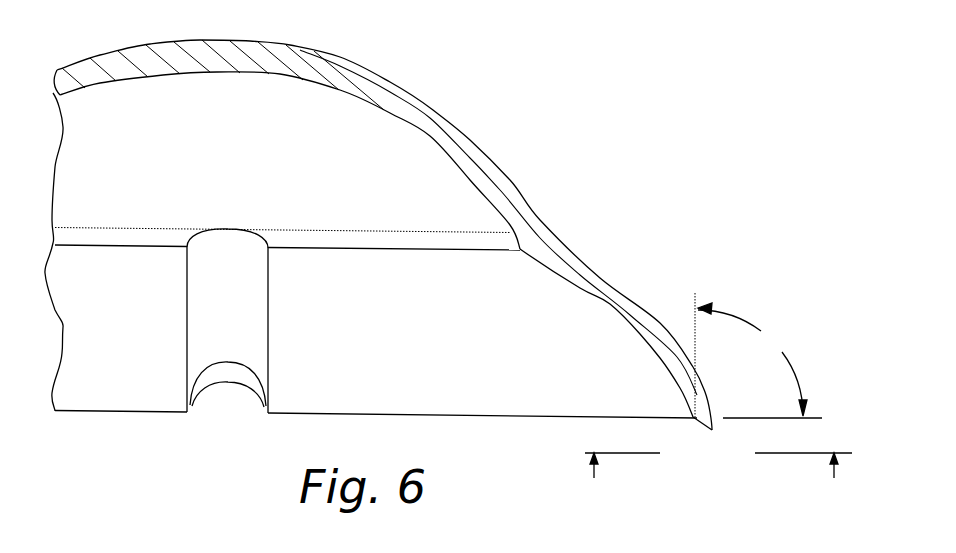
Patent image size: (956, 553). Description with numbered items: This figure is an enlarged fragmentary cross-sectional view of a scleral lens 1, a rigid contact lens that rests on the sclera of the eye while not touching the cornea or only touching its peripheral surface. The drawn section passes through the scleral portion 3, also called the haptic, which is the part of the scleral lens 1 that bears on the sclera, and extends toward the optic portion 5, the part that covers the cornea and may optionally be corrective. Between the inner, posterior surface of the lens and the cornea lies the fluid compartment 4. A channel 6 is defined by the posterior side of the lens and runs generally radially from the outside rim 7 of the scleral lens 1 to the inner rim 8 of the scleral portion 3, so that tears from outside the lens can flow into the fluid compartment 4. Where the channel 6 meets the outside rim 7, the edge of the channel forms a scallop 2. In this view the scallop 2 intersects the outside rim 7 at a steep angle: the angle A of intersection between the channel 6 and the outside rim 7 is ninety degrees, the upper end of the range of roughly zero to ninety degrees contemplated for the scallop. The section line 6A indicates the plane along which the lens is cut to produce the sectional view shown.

The scleral lens 1 is at (410, 90).
The scallop 2 is at (707, 393).
The scleral portion 3 is at (600, 263).
The fluid compartment 4 is at (751, 355).
The optic portion 5 is at (482, 148).
The channel 6 is at (253, 318).
The section line 6A is at (712, 495).
The outside rim 7 is at (708, 422).
The inner rim 8 is at (518, 254).